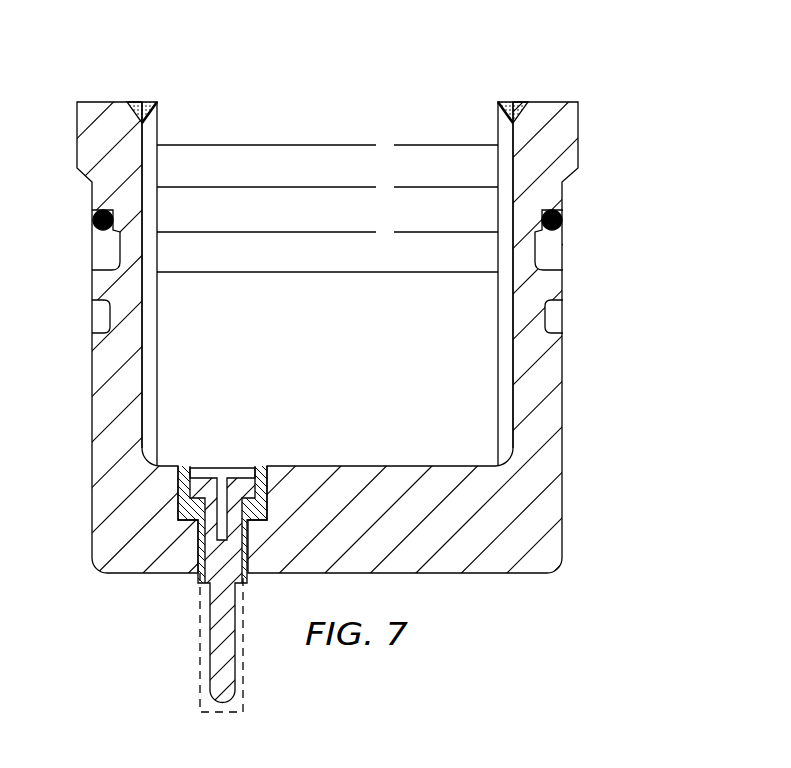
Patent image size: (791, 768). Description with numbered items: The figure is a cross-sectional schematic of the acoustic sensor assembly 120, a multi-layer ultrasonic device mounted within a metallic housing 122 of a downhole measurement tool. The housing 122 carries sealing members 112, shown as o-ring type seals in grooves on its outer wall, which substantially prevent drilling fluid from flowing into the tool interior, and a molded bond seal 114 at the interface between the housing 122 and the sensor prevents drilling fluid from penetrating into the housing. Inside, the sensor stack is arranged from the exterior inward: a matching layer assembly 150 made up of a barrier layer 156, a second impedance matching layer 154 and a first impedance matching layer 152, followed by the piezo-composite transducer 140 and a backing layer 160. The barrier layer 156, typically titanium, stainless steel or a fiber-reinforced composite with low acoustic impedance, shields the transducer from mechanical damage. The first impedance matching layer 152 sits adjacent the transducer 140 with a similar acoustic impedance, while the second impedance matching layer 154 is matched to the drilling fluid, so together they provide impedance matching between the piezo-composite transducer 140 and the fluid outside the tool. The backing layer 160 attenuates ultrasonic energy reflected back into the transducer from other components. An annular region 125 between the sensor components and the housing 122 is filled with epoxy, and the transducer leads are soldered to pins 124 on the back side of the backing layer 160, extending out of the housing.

The acoustic sensor assembly 120 is at (462, 65).
The housing 122 is at (92, 417).
The pins 124 is at (210, 655).
The annular region 125 is at (506, 322).
The sealing members 112 is at (93, 218).
The bond seal 114 is at (135, 100).
The matching layer assembly 150 is at (381, 102).
The barrier layer 156 is at (348, 135).
The second impedance matching layer 154 is at (348, 177).
The first impedance matching layer 152 is at (348, 221).
The piezo-composite transducer 140 is at (348, 264).
The backing layer 160 is at (348, 385).